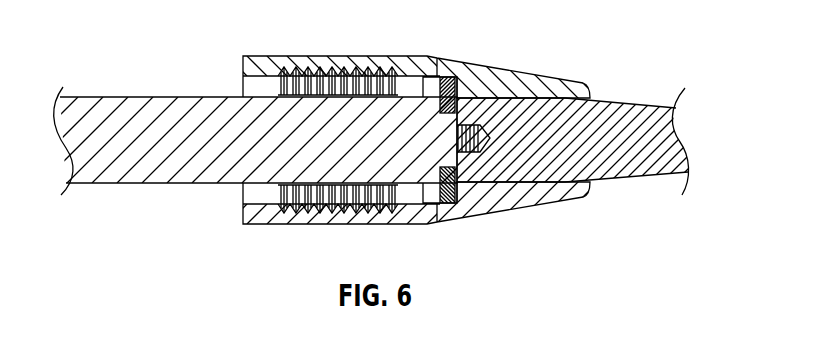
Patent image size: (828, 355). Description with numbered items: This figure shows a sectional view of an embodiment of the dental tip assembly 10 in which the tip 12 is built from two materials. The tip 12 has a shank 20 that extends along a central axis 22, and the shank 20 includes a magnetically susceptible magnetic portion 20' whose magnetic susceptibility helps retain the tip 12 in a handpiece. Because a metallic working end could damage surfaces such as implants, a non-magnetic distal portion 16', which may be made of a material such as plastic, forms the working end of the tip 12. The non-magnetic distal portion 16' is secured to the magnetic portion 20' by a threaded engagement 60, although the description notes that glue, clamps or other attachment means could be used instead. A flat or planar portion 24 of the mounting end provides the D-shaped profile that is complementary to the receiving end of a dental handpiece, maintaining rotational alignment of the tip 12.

The dental tip assembly 10 is at (556, 41).
The tip 12 is at (118, 97).
The non-magnetic distal portion 16' is at (567, 119).
The shank 20 is at (258, 80).
The magnetic portion 20' is at (261, 198).
The central axis 22 is at (281, 56).
The planar portion 24 is at (450, 77).
The threaded engagement 60 is at (479, 153).